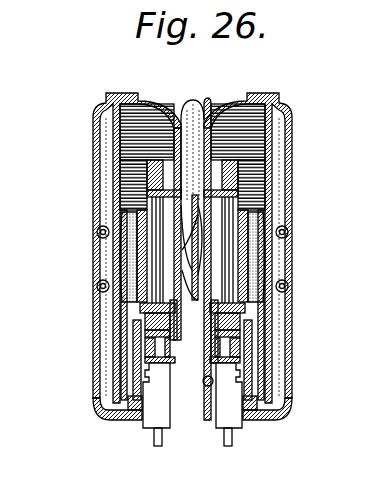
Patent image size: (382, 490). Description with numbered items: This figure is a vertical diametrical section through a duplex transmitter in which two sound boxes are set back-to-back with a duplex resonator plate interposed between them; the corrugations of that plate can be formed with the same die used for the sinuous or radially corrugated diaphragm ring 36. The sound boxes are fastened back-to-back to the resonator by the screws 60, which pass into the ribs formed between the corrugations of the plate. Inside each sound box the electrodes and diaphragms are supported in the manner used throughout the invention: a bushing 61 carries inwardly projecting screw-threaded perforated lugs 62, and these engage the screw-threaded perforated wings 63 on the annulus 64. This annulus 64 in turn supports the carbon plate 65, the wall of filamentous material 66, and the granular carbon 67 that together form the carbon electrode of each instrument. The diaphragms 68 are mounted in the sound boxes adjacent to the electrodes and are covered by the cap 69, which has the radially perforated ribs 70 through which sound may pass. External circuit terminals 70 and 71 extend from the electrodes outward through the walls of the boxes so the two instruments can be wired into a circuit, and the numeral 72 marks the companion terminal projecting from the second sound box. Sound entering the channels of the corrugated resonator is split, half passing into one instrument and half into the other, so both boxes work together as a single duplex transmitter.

The radially corrugated diaphragm ring 36 is at (120, 387).
The screws 60 is at (238, 101).
The bushing 61 is at (137, 345).
The screw-threaded perforated lugs 62 is at (124, 318).
The screw-threaded perforated wings 63 is at (100, 196).
The annulus 64 is at (152, 266).
The carbon plate 65 is at (147, 226).
The wall of filamentous material 66 is at (99, 283).
The granular carbon 67 is at (127, 250).
The diaphragms 68 is at (100, 362).
The cap 69 is at (97, 155).
The radially perforated ribs 70 is at (98, 117).
The external circuit terminal 71 is at (154, 433).
The terminal 72 is at (226, 433).